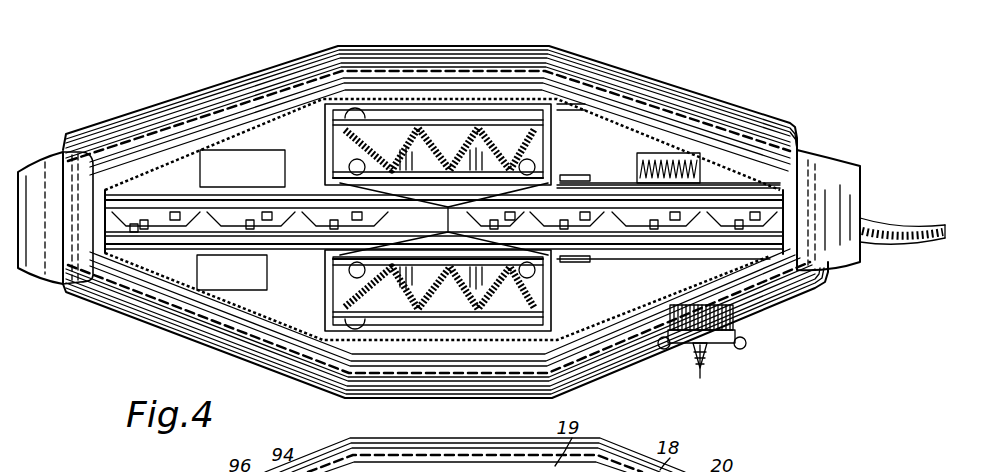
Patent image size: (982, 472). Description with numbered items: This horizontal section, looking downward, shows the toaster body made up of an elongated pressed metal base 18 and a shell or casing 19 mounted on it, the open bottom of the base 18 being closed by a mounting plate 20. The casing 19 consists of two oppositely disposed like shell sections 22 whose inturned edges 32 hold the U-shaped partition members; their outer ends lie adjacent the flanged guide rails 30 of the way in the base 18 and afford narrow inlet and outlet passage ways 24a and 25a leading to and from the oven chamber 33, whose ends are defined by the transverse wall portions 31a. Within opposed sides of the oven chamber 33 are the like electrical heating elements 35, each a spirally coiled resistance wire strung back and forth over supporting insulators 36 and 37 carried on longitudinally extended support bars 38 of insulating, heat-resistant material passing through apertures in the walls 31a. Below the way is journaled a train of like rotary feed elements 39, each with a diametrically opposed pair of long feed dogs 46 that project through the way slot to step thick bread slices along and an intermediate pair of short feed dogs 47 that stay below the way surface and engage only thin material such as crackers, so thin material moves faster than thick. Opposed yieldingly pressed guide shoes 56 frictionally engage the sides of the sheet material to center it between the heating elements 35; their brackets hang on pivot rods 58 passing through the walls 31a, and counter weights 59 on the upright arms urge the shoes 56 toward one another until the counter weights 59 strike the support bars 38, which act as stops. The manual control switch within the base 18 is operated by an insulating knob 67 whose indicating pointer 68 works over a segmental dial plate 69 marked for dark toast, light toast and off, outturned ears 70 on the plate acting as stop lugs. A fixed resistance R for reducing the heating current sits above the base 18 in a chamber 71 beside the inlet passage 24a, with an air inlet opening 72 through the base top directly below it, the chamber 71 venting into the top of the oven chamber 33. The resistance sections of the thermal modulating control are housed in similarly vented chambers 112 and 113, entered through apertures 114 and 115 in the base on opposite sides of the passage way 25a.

The base 18 is at (250, 76).
The shell or casing 19 is at (378, 72).
The mounting plate 20 is at (143, 118).
The shell sections 22 is at (440, 120).
The inlet passage way 24a is at (800, 150).
The outlet passage way 25a is at (238, 175).
The flanged guide rails 30 is at (680, 259).
The transverse wall portions 31a is at (572, 124).
The inturned edges 32 is at (783, 192).
The oven chamber 33 is at (495, 140).
The electrical heating elements 35 is at (530, 125).
The supporting insulators 36 is at (372, 300).
The supporting insulators 37 is at (392, 160).
The support bars 38 is at (460, 130).
The rotary feed elements 39 is at (140, 236).
The long feed dogs 46 is at (290, 222).
The short feed dogs 47 is at (262, 232).
The guide shoes 56 is at (478, 200).
The pivot rods 58 is at (575, 178).
The counter weights 59 is at (592, 113).
The operating knob 67 is at (704, 372).
The indicating pointer 68 is at (697, 360).
The segmental dial plate 69 is at (715, 345).
The outturned ears 70 is at (663, 350).
The chamber 71 is at (655, 135).
The air inlet opening 72 is at (725, 160).
The chamber 112 is at (408, 144).
The chamber 113 is at (413, 290).
The aperture 114 is at (200, 174).
The aperture 115 is at (262, 290).
The fixed resistance R is at (640, 166).